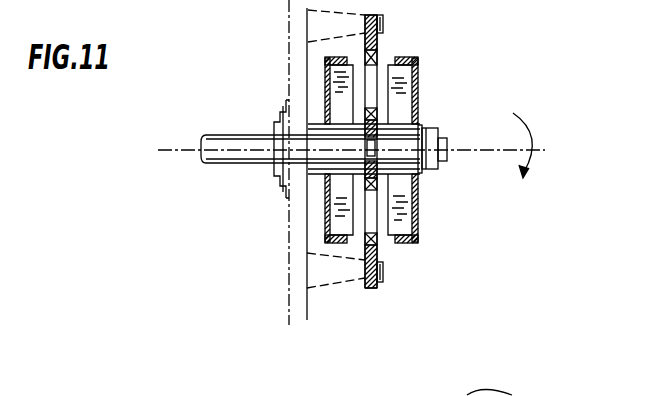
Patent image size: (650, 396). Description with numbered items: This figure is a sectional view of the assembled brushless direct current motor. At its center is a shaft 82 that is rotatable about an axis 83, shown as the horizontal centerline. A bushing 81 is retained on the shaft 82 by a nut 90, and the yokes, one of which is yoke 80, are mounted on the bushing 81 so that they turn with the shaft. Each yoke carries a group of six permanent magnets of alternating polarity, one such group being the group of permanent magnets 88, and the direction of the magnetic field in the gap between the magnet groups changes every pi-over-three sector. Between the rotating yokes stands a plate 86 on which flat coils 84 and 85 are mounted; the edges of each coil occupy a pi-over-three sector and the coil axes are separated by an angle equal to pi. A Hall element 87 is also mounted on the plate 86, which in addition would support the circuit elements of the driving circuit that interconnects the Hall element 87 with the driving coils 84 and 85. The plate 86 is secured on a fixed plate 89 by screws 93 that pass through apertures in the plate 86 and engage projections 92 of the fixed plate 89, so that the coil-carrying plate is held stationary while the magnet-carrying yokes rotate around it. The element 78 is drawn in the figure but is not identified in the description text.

The bearing 78 is at (396, 212).
The yoke 80 is at (418, 82).
The bushing 81 is at (322, 172).
The shaft 82 is at (228, 159).
The axis 83 is at (170, 149).
The flat coil 84 is at (378, 60).
The flat coil 85 is at (378, 240).
The plate 86 is at (378, 251).
The Hall element 87 is at (337, 80).
The group of permanent magnets 88 is at (419, 173).
The fixed plate 89 is at (326, 107).
The nut 90 is at (448, 144).
The projection 92 is at (338, 275).
The screw 93 is at (378, 20).